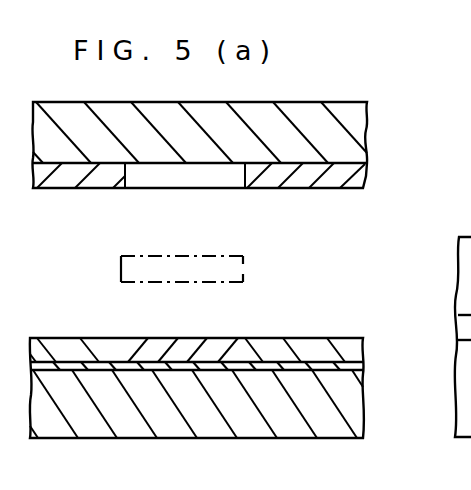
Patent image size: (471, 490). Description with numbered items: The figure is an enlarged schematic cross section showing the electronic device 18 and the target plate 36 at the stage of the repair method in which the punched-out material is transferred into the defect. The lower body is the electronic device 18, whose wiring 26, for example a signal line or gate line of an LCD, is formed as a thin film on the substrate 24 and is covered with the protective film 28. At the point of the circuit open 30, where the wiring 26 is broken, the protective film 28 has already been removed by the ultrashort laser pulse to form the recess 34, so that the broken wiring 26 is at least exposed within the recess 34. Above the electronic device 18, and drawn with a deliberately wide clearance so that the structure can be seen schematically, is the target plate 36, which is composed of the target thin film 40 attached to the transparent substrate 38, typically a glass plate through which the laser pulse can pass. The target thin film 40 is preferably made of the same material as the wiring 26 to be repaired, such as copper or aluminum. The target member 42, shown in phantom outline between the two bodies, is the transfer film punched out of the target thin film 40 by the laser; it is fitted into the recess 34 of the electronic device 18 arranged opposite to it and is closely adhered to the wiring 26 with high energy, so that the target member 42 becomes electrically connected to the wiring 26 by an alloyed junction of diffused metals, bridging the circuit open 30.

The electronic device 18 is at (233, 362).
The substrate 24 is at (348, 423).
The wiring 26 is at (357, 367).
The protective film 28 is at (317, 352).
The circuit open 30 is at (189, 362).
The recess 34 is at (128, 340).
The target plate 36 is at (249, 121).
The transparent substrate 38 is at (312, 125).
The target thin film 40 is at (355, 177).
The target member 42 is at (230, 343).